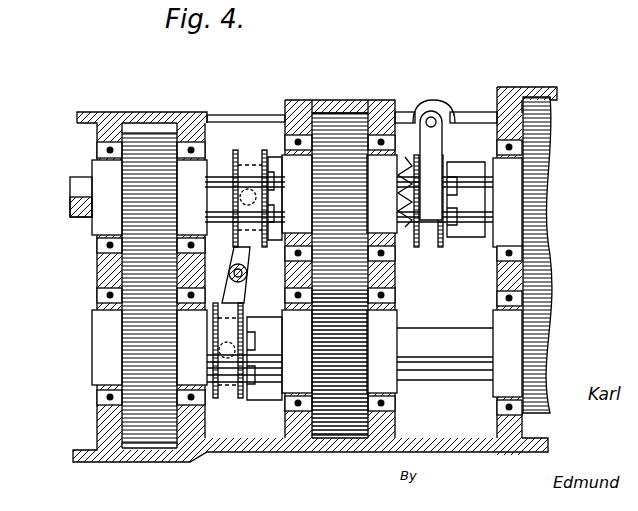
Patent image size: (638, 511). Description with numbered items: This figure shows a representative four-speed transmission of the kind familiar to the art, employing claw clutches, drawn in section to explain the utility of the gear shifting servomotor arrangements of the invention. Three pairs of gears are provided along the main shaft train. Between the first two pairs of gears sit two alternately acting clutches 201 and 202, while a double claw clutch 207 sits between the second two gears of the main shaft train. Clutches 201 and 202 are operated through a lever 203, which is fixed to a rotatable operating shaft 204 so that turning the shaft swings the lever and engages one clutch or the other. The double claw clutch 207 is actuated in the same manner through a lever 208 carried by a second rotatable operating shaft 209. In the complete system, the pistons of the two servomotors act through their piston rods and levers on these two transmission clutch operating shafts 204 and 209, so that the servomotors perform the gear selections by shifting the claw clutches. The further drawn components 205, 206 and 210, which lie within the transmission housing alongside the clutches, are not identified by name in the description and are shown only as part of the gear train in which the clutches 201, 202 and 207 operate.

The clutch 201 is at (249, 163).
The clutch 202 is at (232, 388).
The lever 203 is at (97, 276).
The rotatable operating shaft 204 is at (245, 287).
The gear 205 is at (340, 140).
The gear 206 is at (322, 433).
The double claw clutch 207 is at (433, 248).
The lever 208 is at (440, 146).
The rotatable operating shaft 209 is at (438, 113).
The gear 210 is at (556, 146).